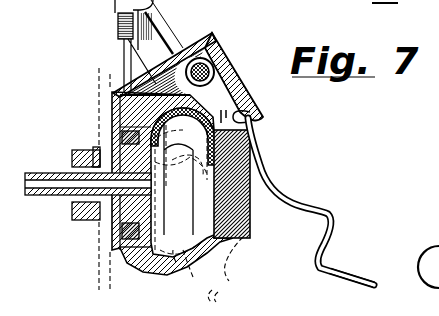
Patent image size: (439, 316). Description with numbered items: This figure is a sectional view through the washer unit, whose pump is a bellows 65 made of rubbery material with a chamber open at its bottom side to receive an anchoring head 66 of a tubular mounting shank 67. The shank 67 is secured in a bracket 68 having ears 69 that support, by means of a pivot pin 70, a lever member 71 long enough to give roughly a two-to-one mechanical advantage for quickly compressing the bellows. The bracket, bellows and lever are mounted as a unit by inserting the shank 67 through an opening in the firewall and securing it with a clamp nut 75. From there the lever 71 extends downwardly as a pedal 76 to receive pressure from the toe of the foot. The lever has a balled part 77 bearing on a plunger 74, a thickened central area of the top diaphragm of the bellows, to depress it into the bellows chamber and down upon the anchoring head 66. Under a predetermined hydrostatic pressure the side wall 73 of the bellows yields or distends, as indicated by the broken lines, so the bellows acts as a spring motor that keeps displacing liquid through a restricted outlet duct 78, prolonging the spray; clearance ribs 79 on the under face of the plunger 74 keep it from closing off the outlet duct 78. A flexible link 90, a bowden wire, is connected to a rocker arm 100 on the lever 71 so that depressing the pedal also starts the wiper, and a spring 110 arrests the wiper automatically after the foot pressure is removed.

The bellows 65 is at (150, 275).
The anchoring head 66 is at (137, 207).
The tubular mounting shank 67 is at (92, 195).
The bracket 68 is at (184, 48).
The ears 69 is at (238, 66).
The pivot pin 70 is at (214, 54).
The lever member 71 is at (238, 78).
The side wall 73 is at (208, 269).
The plunger 74 is at (253, 231).
The clamp nut 75 is at (78, 148).
The pedal 76 is at (353, 266).
The balled part 77 is at (262, 186).
The restricted outlet duct 78 is at (140, 183).
The clearance ribs 79 is at (180, 152).
The flexible link 90 is at (120, 61).
The rocker arm 100 is at (187, 104).
The spring 110 is at (263, 122).